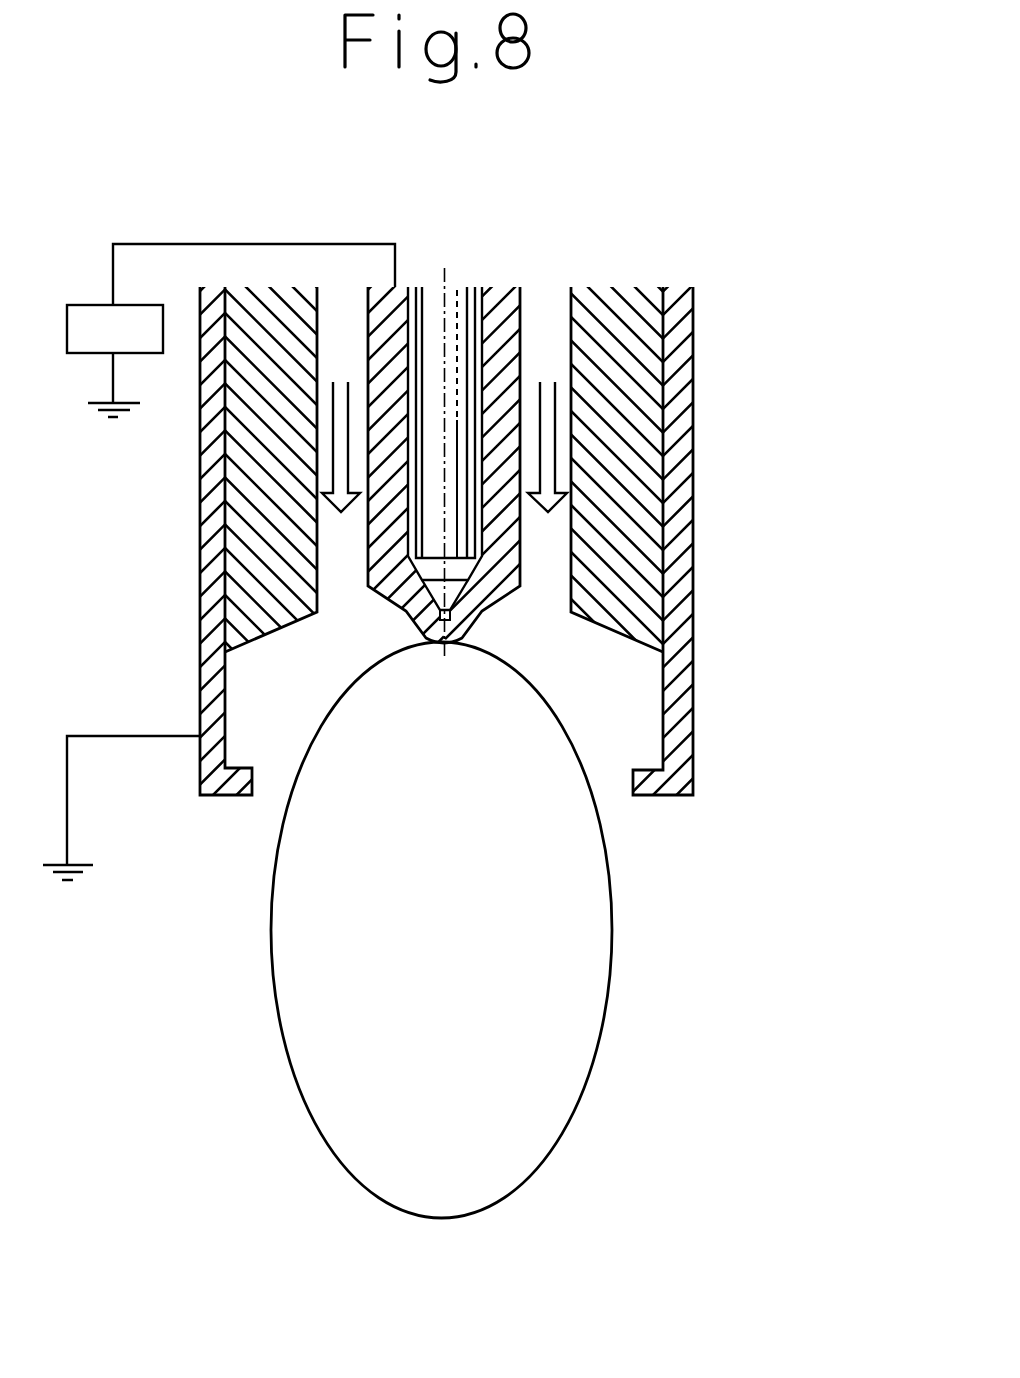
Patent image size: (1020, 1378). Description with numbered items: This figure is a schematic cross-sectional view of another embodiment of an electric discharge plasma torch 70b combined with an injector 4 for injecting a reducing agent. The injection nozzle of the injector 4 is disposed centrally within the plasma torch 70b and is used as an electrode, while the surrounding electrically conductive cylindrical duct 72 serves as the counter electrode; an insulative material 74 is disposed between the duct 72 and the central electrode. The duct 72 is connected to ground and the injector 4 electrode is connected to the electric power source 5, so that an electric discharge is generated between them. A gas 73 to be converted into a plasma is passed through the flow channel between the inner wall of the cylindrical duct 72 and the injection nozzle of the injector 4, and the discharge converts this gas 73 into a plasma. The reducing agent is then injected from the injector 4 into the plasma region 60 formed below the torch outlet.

The injector 4 is at (476, 262).
The electric power source 5 is at (93, 320).
The plasma region 60 is at (587, 1082).
The plasma torch 70b is at (549, 507).
The cylindrical duct 72 is at (678, 415).
The gas 73 is at (550, 380).
The insulative material 74 is at (615, 333).